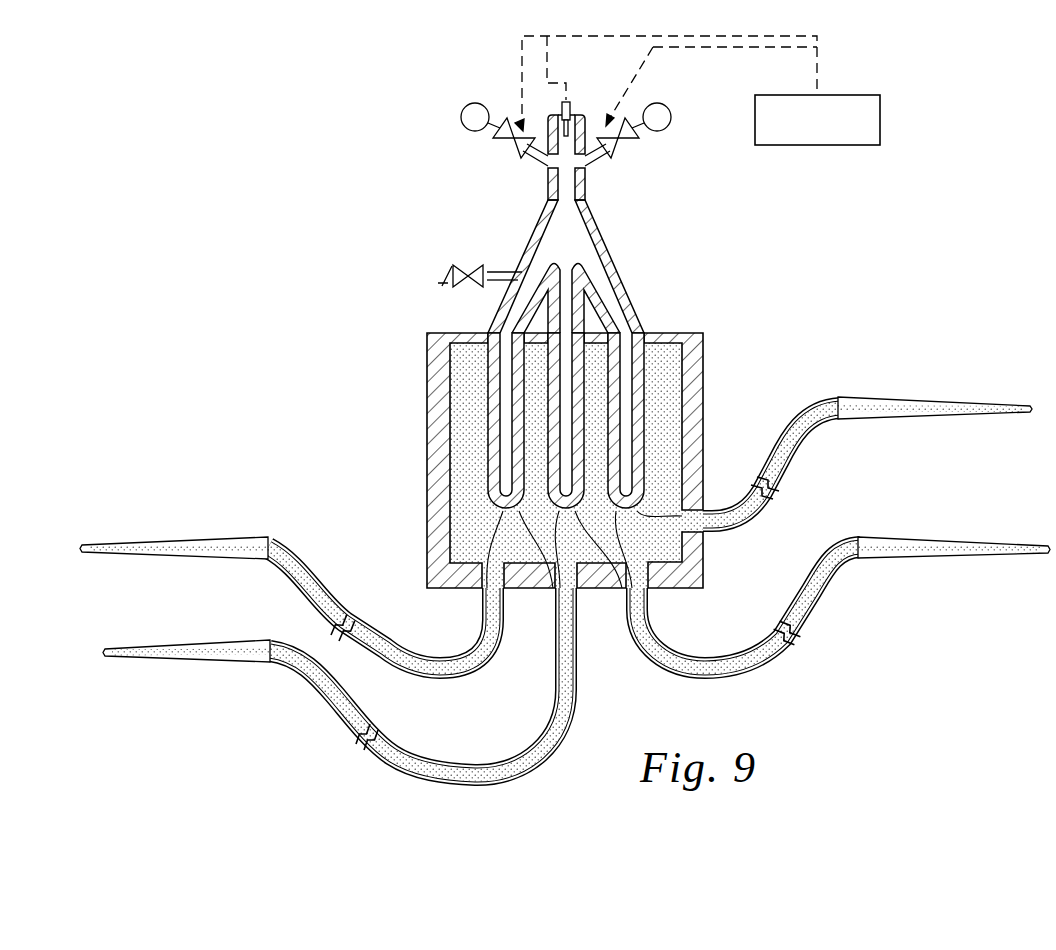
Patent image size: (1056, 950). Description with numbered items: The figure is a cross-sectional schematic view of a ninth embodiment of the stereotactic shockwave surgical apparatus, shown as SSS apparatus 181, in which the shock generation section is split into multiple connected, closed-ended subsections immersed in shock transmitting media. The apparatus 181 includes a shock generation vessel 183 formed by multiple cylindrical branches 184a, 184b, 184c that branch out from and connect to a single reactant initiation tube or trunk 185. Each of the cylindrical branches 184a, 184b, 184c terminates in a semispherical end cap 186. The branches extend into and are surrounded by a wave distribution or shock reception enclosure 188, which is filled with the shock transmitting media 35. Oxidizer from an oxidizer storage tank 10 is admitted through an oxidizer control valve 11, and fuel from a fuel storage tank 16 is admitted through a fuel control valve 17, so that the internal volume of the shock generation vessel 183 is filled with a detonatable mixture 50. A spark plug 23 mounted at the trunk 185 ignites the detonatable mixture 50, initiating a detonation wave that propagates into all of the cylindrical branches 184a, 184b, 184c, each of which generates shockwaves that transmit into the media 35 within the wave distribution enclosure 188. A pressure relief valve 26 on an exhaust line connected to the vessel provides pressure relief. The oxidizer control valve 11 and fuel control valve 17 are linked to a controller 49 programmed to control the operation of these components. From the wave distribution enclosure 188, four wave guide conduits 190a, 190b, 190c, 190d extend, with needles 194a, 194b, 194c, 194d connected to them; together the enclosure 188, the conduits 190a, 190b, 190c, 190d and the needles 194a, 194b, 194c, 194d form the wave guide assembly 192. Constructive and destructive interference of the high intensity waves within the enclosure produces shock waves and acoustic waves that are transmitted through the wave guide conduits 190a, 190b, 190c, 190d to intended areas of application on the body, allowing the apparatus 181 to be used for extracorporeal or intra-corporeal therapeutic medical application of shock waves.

The oxidizer storage tank 10 is at (461, 119).
The oxidizer control valve 11 is at (522, 148).
The fuel storage tank 16 is at (668, 108).
The fuel control valve 17 is at (632, 150).
The spark plug 23 is at (572, 108).
The pressure relief valve 26 is at (467, 263).
The controller 49 is at (882, 102).
The detonatable mixture 50 is at (590, 250).
The SSS apparatus 181 is at (358, 243).
The shock generation vessel 183 is at (596, 266).
The cylindrical branch 184a is at (487, 388).
The cylindrical branch 184b is at (547, 435).
The cylindrical branch 184c is at (644, 387).
The reactant initiation tube 185 is at (583, 170).
The semispherical end caps 186 is at (533, 590).
The wave distribution enclosure 188 is at (695, 462).
The shock transmitting media 35 is at (596, 460).
The wave guide conduit 190a is at (340, 590).
The wave guide conduit 190b is at (306, 668).
The wave guide conduit 190c is at (918, 560).
The wave guide conduit 190d is at (900, 400).
The wave guide assembly 192 is at (340, 486).
The needle 194a is at (118, 543).
The needle 194b is at (120, 660).
The needle 194c is at (1025, 553).
The needle 194d is at (988, 412).